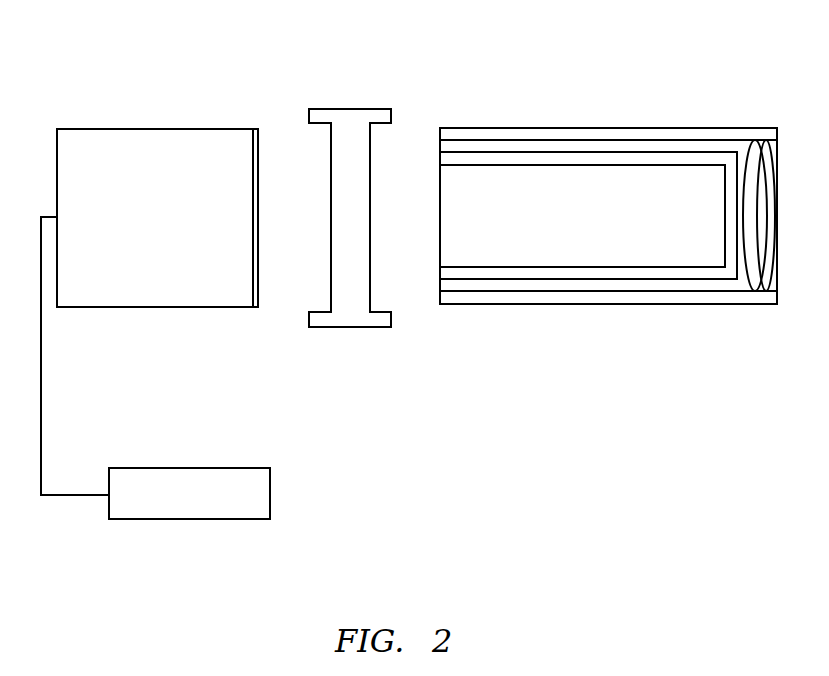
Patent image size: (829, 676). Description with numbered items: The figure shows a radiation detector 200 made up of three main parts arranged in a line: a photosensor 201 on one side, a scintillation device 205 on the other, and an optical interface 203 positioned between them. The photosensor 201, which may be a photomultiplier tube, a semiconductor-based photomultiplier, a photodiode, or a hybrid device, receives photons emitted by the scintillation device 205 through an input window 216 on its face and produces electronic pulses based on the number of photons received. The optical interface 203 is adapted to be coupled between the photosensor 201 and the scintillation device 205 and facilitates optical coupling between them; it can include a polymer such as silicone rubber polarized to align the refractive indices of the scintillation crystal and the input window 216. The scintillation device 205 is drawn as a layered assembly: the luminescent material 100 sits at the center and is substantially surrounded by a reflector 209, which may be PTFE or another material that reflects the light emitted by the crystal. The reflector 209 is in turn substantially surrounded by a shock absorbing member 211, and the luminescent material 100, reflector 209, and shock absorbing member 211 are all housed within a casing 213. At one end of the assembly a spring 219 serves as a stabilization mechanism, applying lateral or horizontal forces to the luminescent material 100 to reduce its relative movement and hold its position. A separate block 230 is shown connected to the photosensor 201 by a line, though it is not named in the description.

The radiation detector 200 is at (105, 61).
The photosensor 201 is at (175, 229).
The input window 216 is at (261, 232).
The controller 230 is at (193, 468).
The optical interface 203 is at (342, 327).
The scintillation device 205 is at (618, 334).
The casing 213 is at (488, 128).
The shock absorbing member 211 is at (563, 146).
The reflector 209 is at (648, 160).
The luminescent material 100 is at (600, 228).
The spring 219 is at (758, 142).